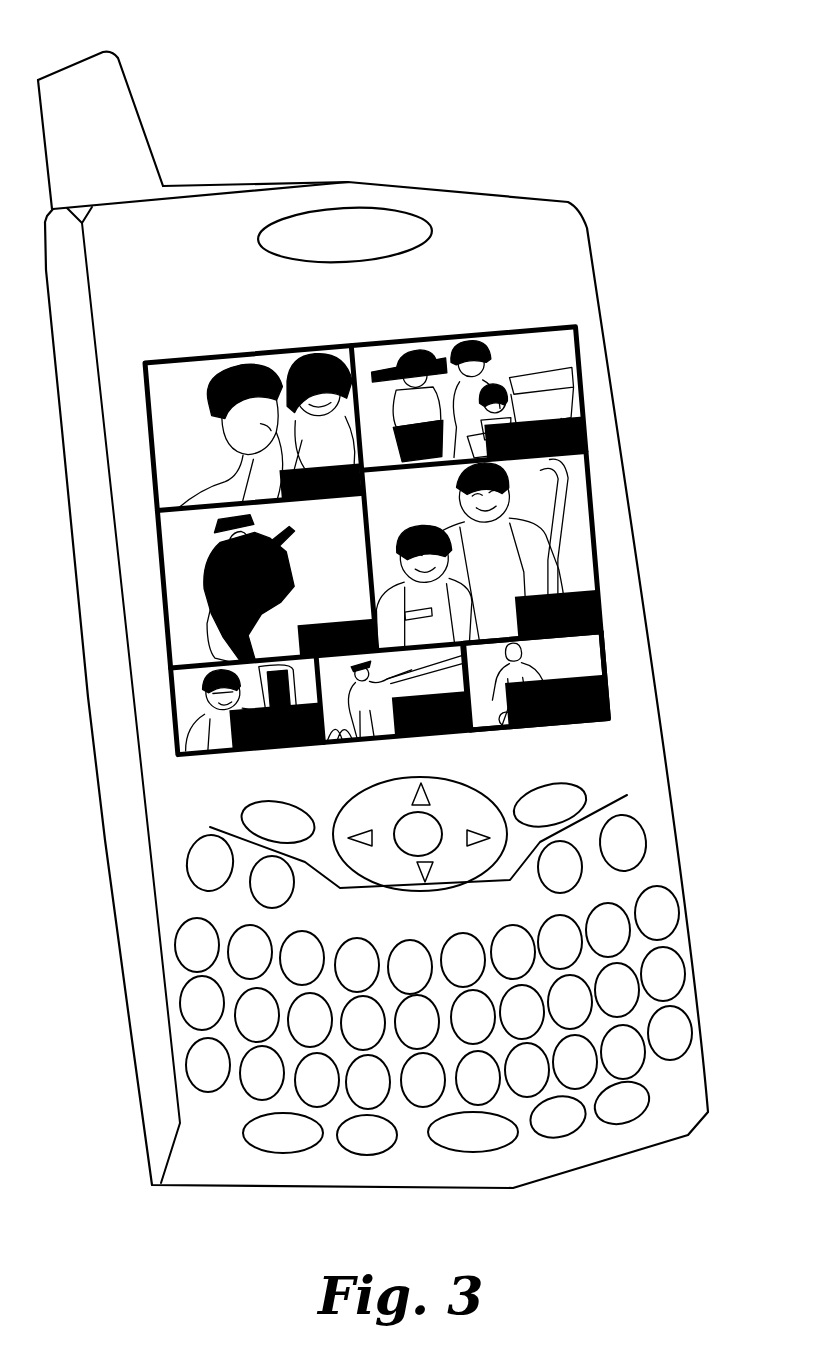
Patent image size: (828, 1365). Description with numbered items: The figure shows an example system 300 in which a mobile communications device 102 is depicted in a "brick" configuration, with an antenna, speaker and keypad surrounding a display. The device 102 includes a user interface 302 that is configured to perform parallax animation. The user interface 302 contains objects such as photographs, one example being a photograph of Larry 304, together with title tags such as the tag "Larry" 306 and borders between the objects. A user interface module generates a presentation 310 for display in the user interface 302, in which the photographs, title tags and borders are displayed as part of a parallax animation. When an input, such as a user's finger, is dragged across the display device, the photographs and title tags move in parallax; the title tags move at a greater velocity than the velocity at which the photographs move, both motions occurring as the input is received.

The system 300 is at (208, 43).
The mobile communications device 102 is at (568, 202).
The user interface 302 is at (619, 322).
The presentation 310 is at (597, 405).
The photograph of Larry 304 is at (596, 636).
The tag "Larry" 306 is at (604, 690).